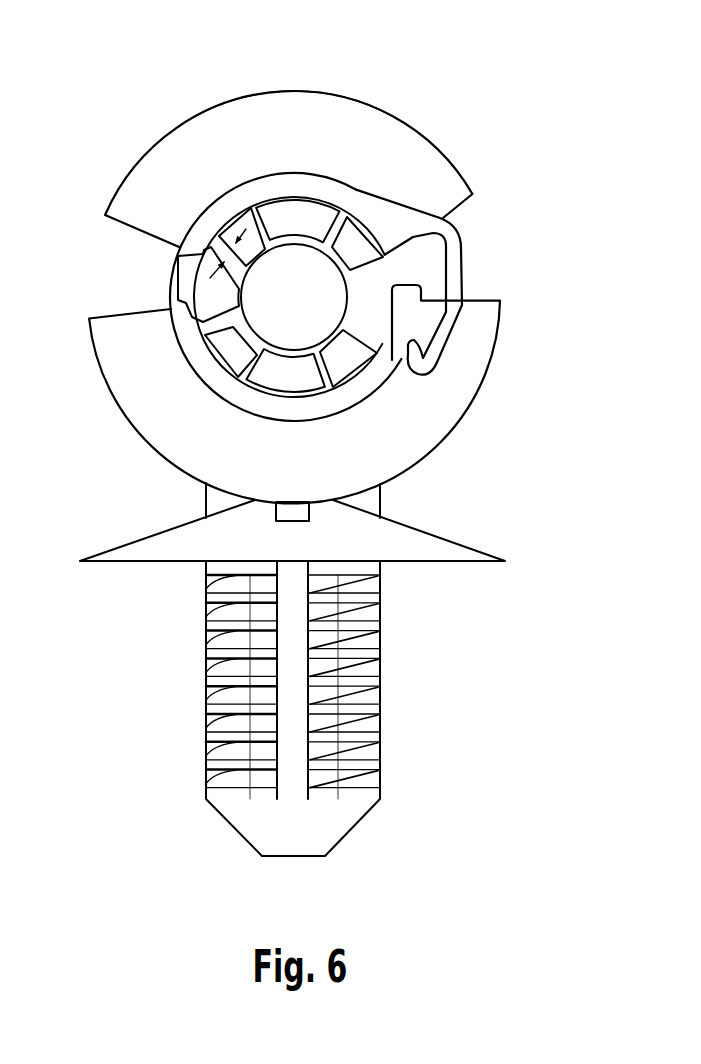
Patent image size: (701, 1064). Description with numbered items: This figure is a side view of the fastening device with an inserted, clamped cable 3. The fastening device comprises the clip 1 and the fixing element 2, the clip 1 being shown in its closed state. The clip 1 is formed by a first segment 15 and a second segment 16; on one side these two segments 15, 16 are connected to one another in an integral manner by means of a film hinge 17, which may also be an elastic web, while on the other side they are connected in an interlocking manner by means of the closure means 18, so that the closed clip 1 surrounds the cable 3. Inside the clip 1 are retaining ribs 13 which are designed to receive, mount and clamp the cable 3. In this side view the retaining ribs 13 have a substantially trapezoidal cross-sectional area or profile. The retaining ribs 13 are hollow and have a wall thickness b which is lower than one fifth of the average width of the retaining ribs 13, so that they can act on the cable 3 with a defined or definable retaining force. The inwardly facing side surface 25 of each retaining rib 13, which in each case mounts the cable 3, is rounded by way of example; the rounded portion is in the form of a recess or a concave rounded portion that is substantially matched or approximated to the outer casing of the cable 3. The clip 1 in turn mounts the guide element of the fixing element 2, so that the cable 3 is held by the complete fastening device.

The clip 1 is at (388, 85).
The fixing element 2 is at (420, 648).
The cable 3 is at (330, 290).
The retaining ribs 13 is at (235, 228).
The first segment 15 is at (297, 110).
The second segment 16 is at (410, 437).
The film hinge 17 is at (173, 276).
The closure means 18 is at (423, 342).
The inwardly facing side surface 25 is at (332, 342).
The wall thickness b is at (218, 262).